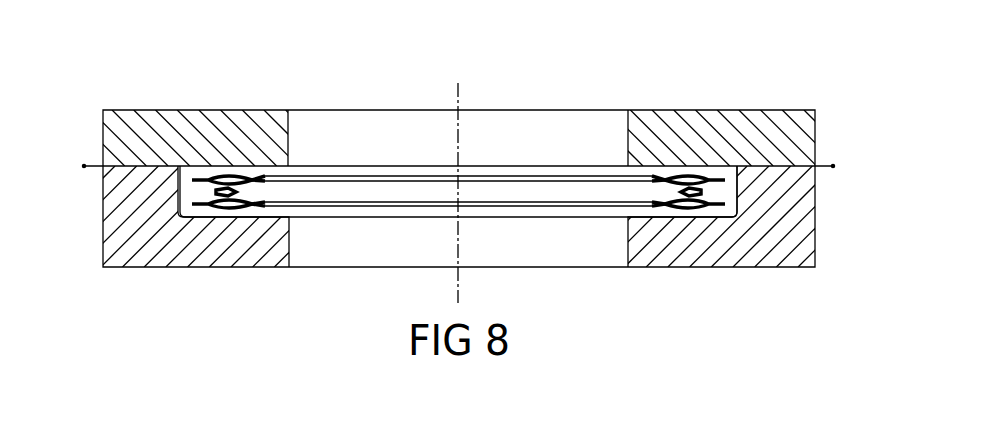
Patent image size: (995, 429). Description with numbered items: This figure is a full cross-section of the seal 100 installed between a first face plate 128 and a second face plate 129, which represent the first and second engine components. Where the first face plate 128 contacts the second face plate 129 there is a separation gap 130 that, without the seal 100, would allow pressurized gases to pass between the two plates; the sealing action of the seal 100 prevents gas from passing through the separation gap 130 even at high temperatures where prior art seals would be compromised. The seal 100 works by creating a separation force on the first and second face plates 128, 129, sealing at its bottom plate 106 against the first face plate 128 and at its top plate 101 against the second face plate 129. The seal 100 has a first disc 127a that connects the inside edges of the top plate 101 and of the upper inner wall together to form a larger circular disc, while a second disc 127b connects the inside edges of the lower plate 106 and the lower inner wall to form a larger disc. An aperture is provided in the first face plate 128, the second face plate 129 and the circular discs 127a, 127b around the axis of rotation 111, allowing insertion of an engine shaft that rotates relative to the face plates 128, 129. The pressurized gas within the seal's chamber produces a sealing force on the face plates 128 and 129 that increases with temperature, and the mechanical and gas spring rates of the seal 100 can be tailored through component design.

The seal 100 is at (727, 191).
The top plate 101 is at (252, 168).
The bottom plate 106 is at (252, 215).
The axis of rotation 111 is at (458, 131).
The first disc 127a is at (357, 176).
The second disc 127b is at (345, 206).
The first face plate 128 is at (152, 259).
The second face plate 129 is at (152, 122).
The separation gap 130 is at (82, 166).